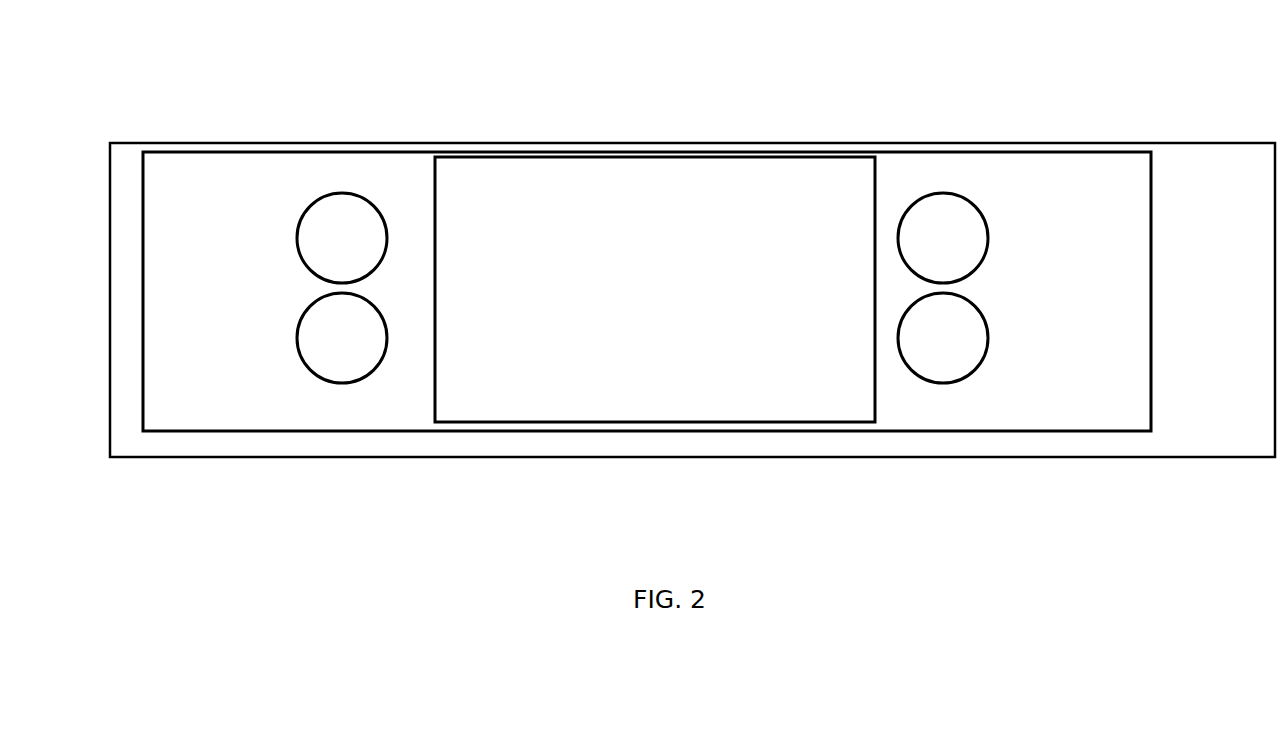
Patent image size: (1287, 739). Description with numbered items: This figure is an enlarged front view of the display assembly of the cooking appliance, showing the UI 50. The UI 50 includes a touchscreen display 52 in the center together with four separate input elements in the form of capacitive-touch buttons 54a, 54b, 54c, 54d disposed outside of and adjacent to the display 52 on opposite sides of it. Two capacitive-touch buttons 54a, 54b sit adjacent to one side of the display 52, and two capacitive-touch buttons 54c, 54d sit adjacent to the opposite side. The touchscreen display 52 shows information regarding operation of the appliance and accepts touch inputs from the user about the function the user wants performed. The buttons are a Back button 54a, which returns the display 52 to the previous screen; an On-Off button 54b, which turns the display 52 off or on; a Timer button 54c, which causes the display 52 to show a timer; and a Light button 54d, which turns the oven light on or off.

The UI 50 is at (160, 81).
The touchscreen display 52 is at (691, 243).
The capacitive-touch button 54a is at (297, 240).
The capacitive-touch button 54b is at (308, 368).
The capacitive-touch button 54c is at (986, 256).
The capacitive-touch button 54d is at (988, 339).